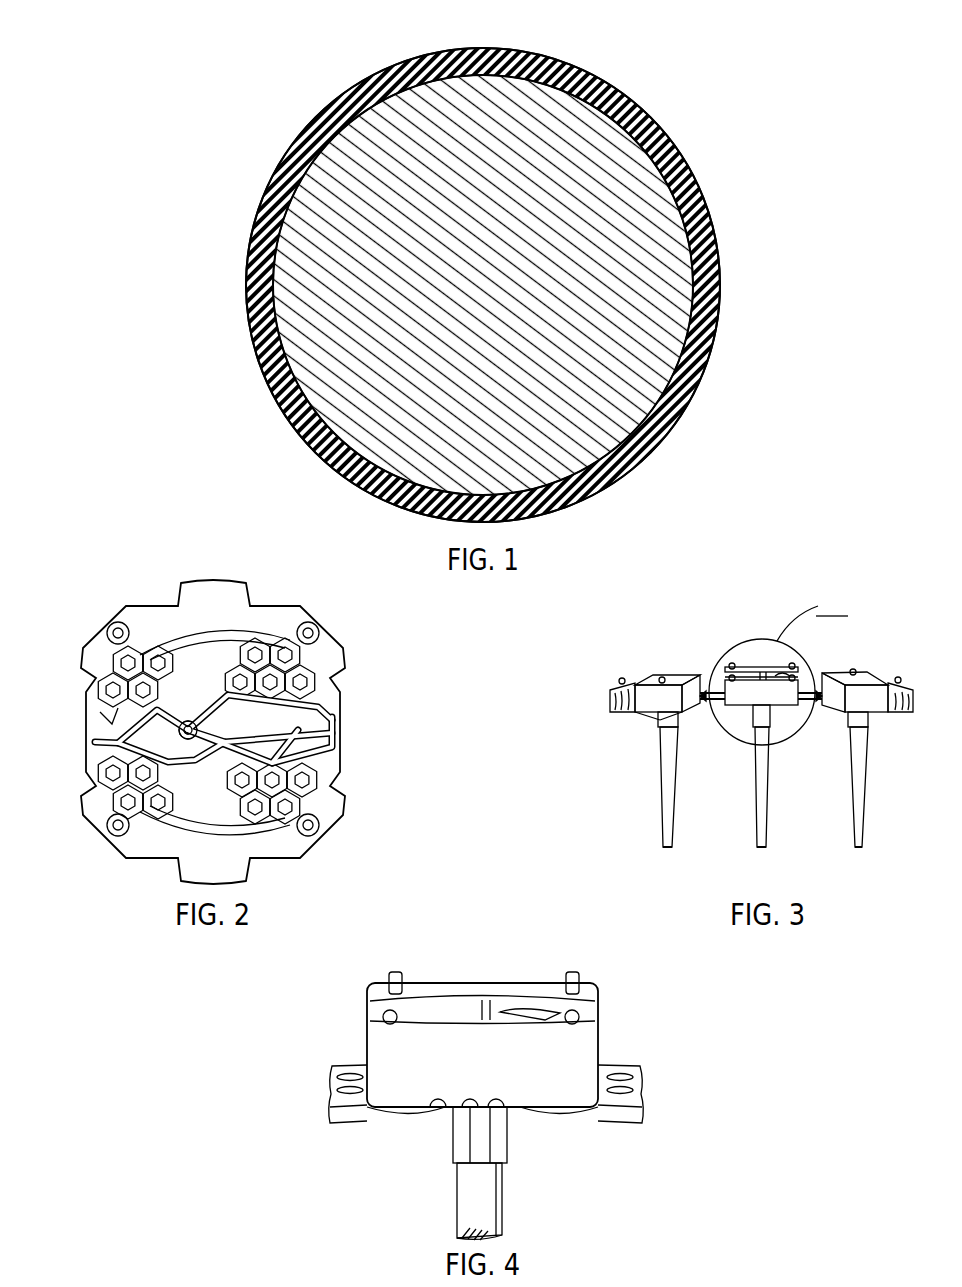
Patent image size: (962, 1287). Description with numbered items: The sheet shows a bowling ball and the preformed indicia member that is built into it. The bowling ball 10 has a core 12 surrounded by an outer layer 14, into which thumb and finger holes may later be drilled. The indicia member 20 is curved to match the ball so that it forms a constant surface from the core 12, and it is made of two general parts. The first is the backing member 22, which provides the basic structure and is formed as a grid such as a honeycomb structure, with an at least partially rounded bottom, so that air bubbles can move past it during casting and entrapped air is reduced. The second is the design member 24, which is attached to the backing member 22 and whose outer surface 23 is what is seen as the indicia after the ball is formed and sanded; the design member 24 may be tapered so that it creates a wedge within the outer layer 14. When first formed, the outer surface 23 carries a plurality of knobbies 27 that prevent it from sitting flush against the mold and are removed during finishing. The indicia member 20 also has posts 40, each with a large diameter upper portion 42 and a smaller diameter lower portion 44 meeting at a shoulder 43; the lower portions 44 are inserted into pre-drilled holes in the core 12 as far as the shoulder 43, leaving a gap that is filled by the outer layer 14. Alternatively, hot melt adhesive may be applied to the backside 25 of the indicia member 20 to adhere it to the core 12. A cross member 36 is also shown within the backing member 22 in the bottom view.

In FIG. 1, the bowling ball 10 is at (692, 109).
In FIG. 1, the core 12 is at (648, 227).
In FIG. 1, the outer layer 14 is at (705, 376).
In FIG. 2, the indicia member 20 is at (134, 577).
In FIG. 3, the indicia member 20 is at (621, 662).
In FIG. 2, the backing member 22 is at (99, 678).
In FIG. 3, the backing member 22 is at (718, 702).
In FIG. 4, the backing member 22 is at (351, 1112).
In FIG. 4, the outer surface 23 is at (499, 977).
In FIG. 2, the design member 24 is at (215, 597).
In FIG. 3, the design member 24 is at (640, 697).
In FIG. 4, the design member 24 is at (580, 1047).
In FIG. 3, the backside 25 is at (632, 716).
In FIG. 4, the backside 25 is at (548, 1108).
In FIG. 3, the knobbies 27 is at (624, 678).
In FIG. 4, the knobbies 27 is at (579, 1012).
In FIG. 2, the cross member 36 is at (338, 745).
In FIG. 2, the posts 40 is at (110, 627).
In FIG. 3, the posts 40 is at (764, 776).
In FIG. 4, the posts 40 is at (489, 1173).
In FIG. 3, the large diameter upper portion 42 is at (660, 720).
In FIG. 4, the large diameter upper portion 42 is at (468, 1143).
In FIG. 3, the shoulder 43 is at (668, 736).
In FIG. 4, the shoulder 43 is at (504, 1166).
In FIG. 3, the smaller diameter lower portion 44 is at (669, 830).
In FIG. 4, the smaller diameter lower portion 44 is at (501, 1235).